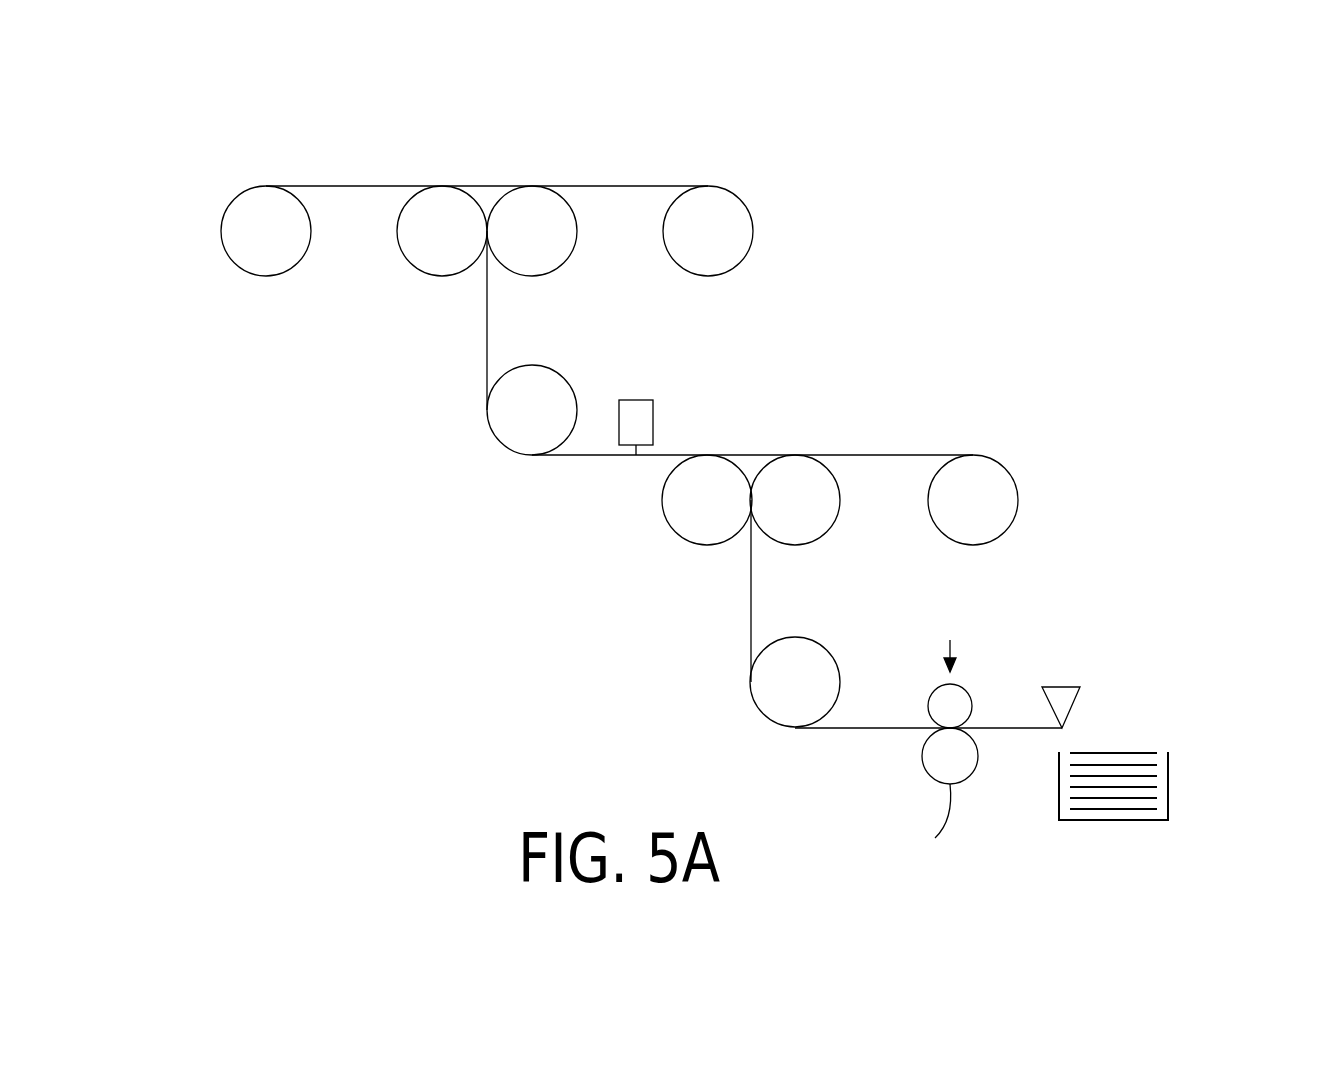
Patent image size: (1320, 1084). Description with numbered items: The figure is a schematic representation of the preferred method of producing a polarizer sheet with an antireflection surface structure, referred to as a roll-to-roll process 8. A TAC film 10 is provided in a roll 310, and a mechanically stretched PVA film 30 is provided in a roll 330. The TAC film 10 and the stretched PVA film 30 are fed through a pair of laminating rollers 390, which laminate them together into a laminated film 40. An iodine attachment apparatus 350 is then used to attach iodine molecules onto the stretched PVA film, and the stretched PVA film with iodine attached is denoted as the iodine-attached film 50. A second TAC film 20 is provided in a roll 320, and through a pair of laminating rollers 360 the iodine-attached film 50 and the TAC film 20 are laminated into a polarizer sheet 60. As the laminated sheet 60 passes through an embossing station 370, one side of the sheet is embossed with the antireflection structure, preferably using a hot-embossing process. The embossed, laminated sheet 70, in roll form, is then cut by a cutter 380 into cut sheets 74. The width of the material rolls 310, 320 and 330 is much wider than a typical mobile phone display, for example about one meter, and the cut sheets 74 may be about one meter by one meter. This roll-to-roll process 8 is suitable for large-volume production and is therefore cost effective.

The roll-to-roll process 8 is at (1040, 225).
The TAC film 10 is at (298, 186).
The roll 310 is at (268, 277).
The pair of laminating rollers 390 is at (408, 175).
The mechanically stretched PVA film 30 is at (685, 187).
The roll 330 is at (750, 228).
The laminated film 40 is at (487, 345).
The iodine attachment apparatus 350 is at (636, 458).
The iodine-attached film 50 is at (675, 455).
The pair of laminating rollers 360 is at (685, 450).
The TAC film 20 is at (952, 458).
The roll 320 is at (1015, 497).
The polarizer sheet 60 is at (751, 630).
The embossing station 370 is at (882, 749).
The embossed laminated sheet 70 is at (1027, 732).
The cutter 380 is at (1058, 687).
The cut sheets 74 is at (1150, 746).